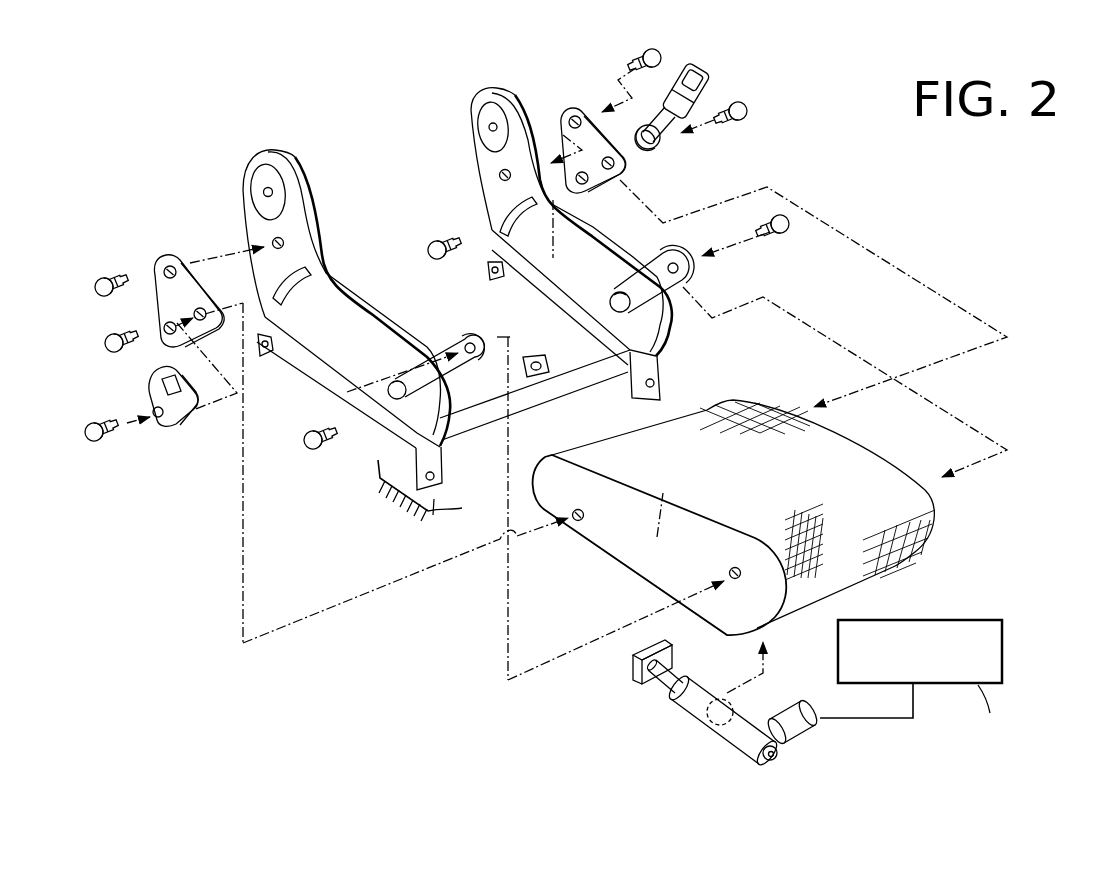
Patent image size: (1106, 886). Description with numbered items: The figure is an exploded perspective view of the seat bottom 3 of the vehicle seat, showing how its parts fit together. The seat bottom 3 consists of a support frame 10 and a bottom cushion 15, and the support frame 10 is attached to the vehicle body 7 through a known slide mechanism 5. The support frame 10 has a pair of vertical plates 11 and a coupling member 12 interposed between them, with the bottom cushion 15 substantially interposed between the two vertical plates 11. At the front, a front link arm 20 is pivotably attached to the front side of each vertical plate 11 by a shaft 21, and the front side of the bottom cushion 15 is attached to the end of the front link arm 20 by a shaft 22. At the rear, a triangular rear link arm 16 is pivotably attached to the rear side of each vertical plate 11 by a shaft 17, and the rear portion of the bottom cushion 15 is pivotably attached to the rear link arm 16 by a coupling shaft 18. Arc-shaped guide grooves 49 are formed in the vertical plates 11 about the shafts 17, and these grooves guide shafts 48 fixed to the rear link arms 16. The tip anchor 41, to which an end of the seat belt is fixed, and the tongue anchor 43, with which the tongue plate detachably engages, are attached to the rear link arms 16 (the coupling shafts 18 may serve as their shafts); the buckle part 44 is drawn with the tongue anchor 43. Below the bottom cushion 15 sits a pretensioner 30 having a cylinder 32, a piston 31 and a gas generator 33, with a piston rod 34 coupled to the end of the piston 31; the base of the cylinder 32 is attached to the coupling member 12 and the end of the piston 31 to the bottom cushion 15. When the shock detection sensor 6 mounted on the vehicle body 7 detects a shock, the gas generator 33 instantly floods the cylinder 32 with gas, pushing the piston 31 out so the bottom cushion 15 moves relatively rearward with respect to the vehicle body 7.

The seat bottom 3 is at (424, 610).
The slide mechanism 5 is at (320, 376).
The shock detection sensor 6 is at (983, 643).
The vehicle body 7 is at (433, 512).
The support frame 10 is at (506, 277).
The vertical plate 11 is at (313, 208).
The coupling member 12 is at (555, 345).
The bottom cushion 15 is at (946, 493).
The rear link arm 16 is at (175, 251).
The shaft 17 is at (104, 277).
The coupling shaft 18 is at (95, 446).
The front link arm 20 is at (462, 340).
The shaft 21 is at (382, 380).
The shaft 22 is at (320, 452).
The pretensioner 30 is at (722, 714).
The piston 31 is at (723, 737).
The cylinder 32 is at (690, 690).
The gas generator 33 is at (807, 725).
The piston rod 34 is at (662, 673).
The tip anchor 41 is at (168, 425).
The tongue anchor 43 is at (703, 92).
The buckle arm 44 is at (663, 148).
The shaft 48 is at (106, 351).
The guide groove 49 is at (298, 297).